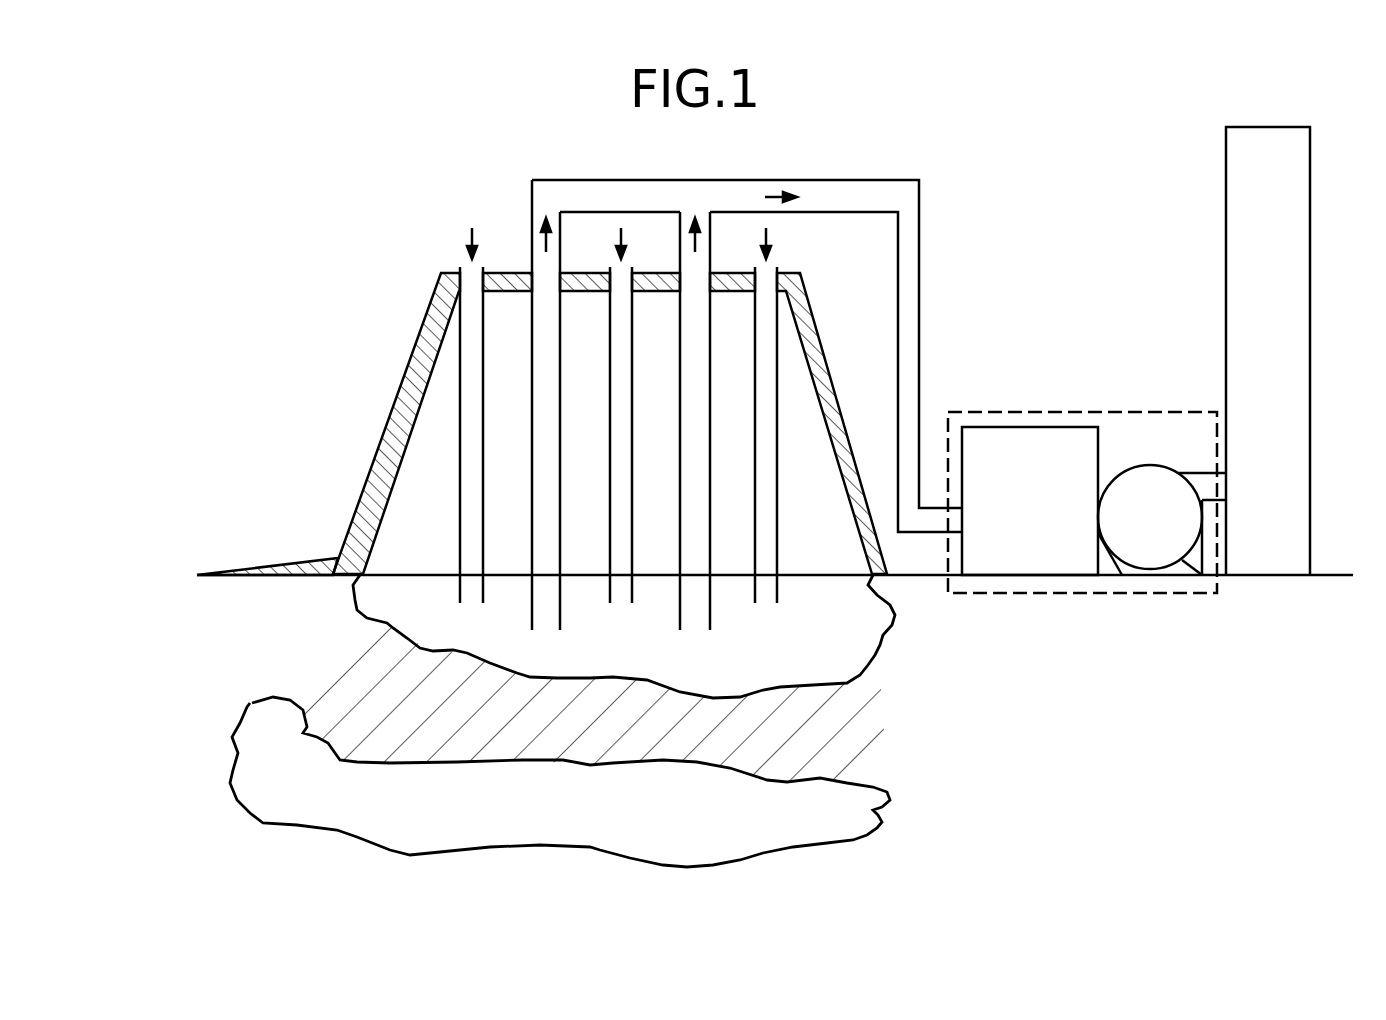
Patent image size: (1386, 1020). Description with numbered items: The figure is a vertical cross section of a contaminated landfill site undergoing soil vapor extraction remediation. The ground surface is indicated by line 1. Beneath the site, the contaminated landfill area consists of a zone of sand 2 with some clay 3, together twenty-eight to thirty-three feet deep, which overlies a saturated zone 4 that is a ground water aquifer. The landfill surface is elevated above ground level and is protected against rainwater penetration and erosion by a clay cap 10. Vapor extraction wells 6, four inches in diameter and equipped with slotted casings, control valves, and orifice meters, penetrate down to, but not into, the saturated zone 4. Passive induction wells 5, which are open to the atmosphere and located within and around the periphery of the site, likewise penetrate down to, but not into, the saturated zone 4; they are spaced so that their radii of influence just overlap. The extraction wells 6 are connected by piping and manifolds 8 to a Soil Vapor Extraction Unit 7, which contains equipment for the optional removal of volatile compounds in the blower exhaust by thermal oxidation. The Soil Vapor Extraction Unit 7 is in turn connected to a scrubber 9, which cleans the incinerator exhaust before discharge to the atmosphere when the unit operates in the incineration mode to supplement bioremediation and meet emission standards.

The ground surface line 1 is at (278, 562).
The zone of sand 2 is at (863, 633).
The clay 3 is at (828, 738).
The saturated zone 4 is at (847, 827).
The passive induction wells 5 is at (470, 453).
The vapor extraction wells 6 is at (543, 498).
The Soil Vapor Extraction Unit 7 is at (1065, 394).
The piping and manifolds 8 is at (938, 216).
The scrubber 9 is at (1296, 313).
The clay cap 10 is at (404, 373).